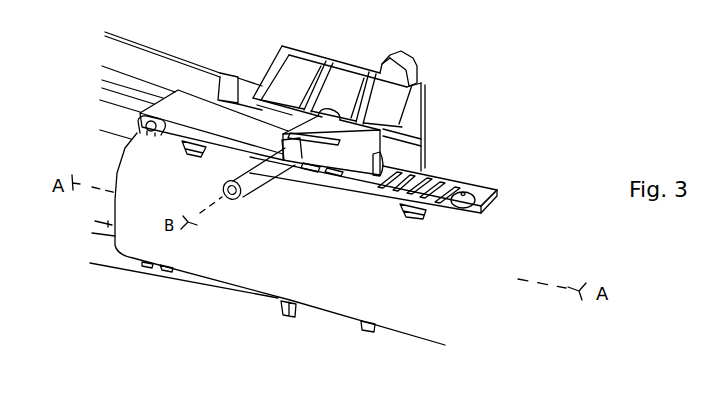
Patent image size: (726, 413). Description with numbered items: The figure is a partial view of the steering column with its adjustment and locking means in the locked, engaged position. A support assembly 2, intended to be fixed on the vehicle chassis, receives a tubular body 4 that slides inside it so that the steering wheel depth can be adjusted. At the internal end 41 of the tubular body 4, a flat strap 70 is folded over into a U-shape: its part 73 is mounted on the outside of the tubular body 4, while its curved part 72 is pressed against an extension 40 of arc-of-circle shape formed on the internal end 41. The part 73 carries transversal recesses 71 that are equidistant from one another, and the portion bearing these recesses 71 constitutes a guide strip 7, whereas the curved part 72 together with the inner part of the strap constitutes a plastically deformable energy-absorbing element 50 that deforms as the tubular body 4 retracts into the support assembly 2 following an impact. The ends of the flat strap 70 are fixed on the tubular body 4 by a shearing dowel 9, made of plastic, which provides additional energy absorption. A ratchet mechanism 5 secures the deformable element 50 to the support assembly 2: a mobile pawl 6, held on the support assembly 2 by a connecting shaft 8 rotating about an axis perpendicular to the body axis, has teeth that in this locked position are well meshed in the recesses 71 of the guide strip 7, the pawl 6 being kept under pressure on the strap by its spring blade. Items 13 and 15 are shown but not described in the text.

The support assembly 2 is at (253, 46).
The tubular body 4 is at (264, 258).
The ratchet mechanism 5 is at (541, 77).
The mobile pawl 6 is at (382, 128).
The guide strip 7 is at (441, 174).
The connecting shaft 8 is at (243, 197).
The shearing dowel 9 is at (483, 206).
The tab 13 is at (408, 55).
The foot 15 is at (393, 194).
The extension 40 is at (137, 132).
The internal end 41 is at (110, 223).
The plastically deformable energy-absorbing element 50 is at (243, 100).
The flat strap 70 is at (487, 194).
The recesses 71 is at (440, 210).
The curved part 72 is at (149, 107).
The part mounted outside the tubular body 73 is at (198, 106).